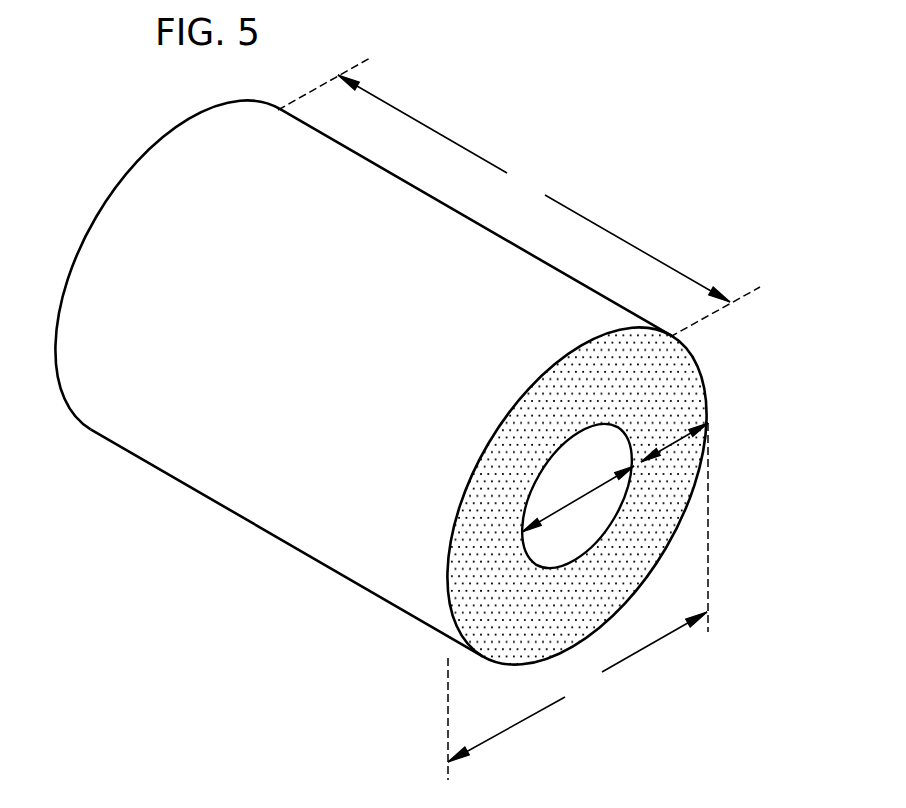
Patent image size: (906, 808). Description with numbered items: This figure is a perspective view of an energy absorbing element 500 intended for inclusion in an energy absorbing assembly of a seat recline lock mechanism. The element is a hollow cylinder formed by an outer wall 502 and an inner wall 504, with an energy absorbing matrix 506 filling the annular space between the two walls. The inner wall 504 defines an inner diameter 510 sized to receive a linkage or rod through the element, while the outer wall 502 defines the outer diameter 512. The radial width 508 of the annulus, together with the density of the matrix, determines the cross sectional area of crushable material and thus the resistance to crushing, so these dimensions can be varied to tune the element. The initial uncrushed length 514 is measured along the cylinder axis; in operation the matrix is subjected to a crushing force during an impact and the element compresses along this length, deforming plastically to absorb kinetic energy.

The energy absorbing element 500 is at (622, 172).
The outer wall 502 is at (270, 537).
The inner wall 504 is at (573, 455).
The energy absorbing matrix 506 is at (483, 575).
The width of the annulus 508 is at (672, 445).
The inner diameter 510 is at (582, 500).
The outer diameter 512 is at (578, 601).
The initial uncrushed length 514 is at (519, 197).